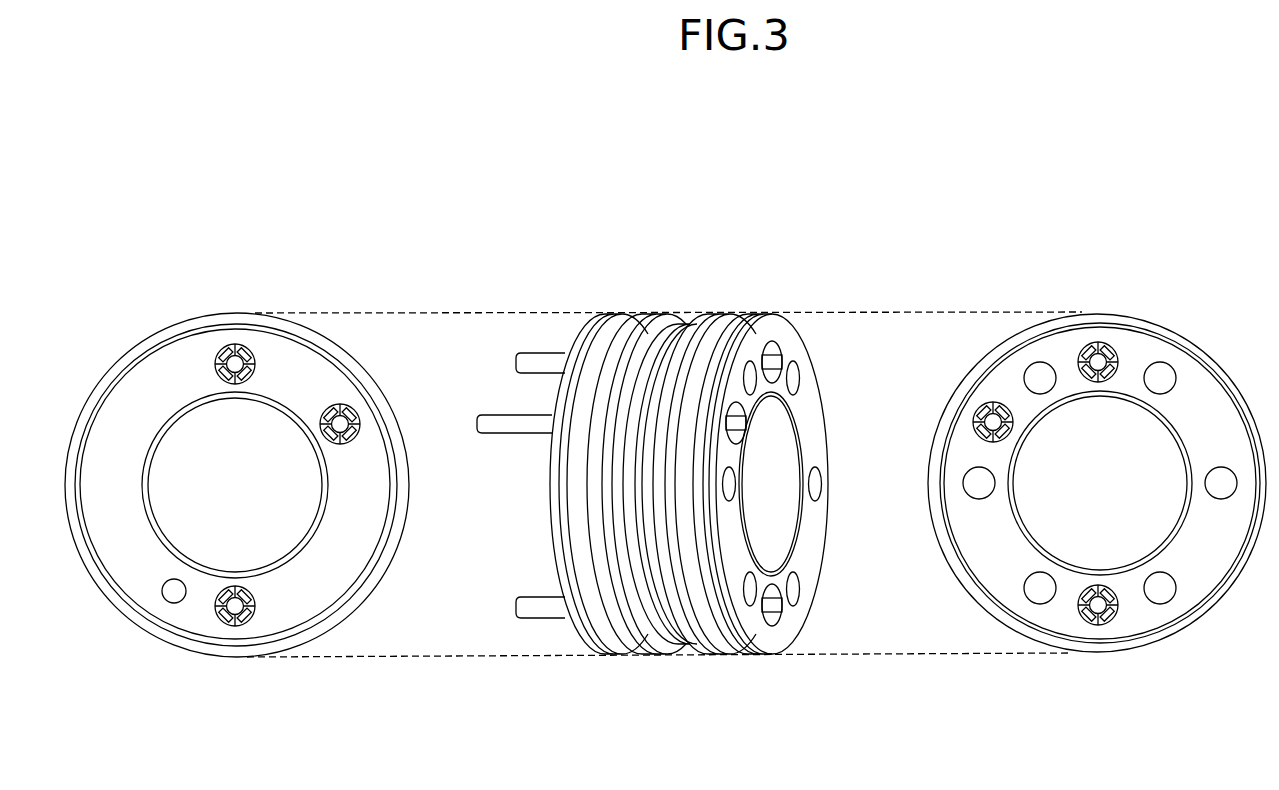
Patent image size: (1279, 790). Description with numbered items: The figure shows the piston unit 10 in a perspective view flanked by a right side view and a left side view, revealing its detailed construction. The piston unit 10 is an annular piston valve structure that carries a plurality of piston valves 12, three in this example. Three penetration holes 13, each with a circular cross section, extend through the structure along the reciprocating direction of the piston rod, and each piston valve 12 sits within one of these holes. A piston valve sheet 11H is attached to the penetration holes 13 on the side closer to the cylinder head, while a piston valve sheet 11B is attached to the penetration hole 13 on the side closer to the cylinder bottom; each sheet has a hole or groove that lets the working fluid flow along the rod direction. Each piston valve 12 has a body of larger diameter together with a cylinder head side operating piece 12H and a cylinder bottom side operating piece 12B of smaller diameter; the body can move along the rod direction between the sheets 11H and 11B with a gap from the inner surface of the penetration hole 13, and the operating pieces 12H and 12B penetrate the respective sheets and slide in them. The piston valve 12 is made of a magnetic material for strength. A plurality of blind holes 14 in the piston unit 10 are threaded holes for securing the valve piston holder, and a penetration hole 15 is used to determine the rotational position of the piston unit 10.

The piston unit 10 is at (226, 288).
The piston valve sheet 11H is at (215, 365).
The piston valve sheet 11B is at (1120, 362).
The piston valve 12 is at (543, 338).
The cylinder head side operating piece 12H is at (517, 363).
The cylinder bottom side operating piece 12B is at (782, 362).
The penetration hole 13 is at (256, 365).
The blind hole 14 is at (824, 484).
The penetration hole 15 is at (168, 603).